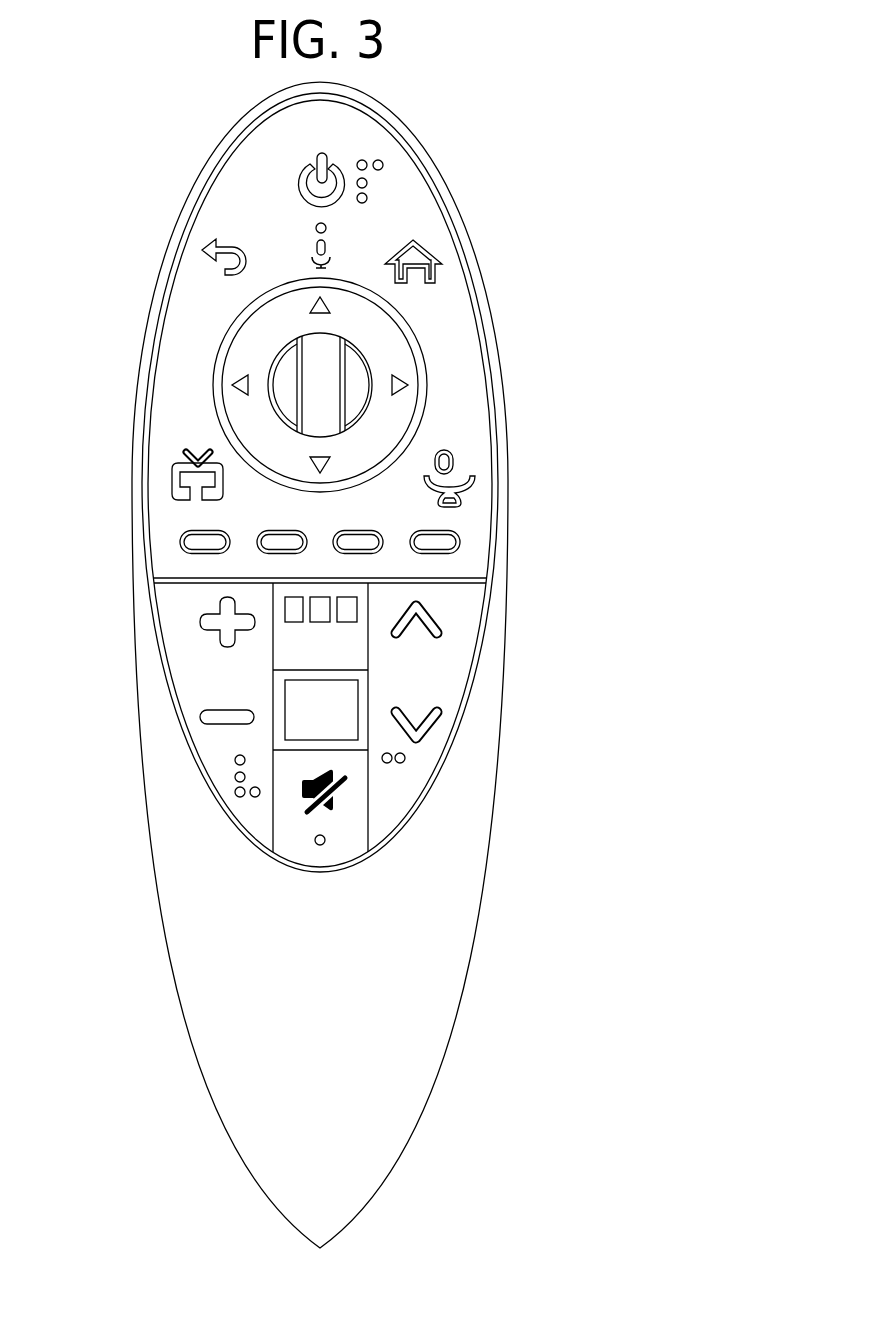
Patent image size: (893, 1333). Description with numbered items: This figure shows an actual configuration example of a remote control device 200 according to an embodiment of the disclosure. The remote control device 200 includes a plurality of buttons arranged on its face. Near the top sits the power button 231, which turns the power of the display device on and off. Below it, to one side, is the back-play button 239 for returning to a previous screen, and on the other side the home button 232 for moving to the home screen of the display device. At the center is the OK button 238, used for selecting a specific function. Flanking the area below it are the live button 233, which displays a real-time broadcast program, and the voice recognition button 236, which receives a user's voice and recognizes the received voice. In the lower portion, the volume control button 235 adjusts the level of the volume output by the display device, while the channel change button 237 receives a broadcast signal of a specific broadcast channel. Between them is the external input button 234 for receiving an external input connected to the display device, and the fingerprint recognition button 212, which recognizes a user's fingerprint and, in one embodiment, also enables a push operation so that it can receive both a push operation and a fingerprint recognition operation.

The remote control device 200 is at (74, 127).
The fingerprint recognition button 212 is at (337, 742).
The power button 231 is at (337, 170).
The home button 232 is at (432, 247).
The live button 233 is at (172, 486).
The external input button 234 is at (327, 600).
The volume control button 235 is at (173, 687).
The voice recognition button 236 is at (462, 473).
The channel change button 237 is at (455, 660).
The OK button 238 is at (283, 367).
The back-play button 239 is at (207, 266).